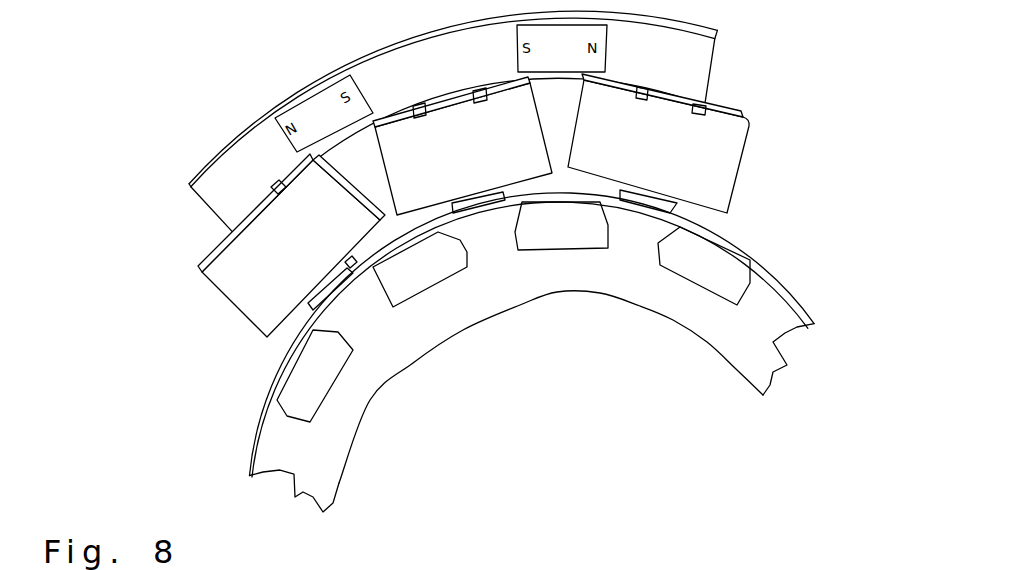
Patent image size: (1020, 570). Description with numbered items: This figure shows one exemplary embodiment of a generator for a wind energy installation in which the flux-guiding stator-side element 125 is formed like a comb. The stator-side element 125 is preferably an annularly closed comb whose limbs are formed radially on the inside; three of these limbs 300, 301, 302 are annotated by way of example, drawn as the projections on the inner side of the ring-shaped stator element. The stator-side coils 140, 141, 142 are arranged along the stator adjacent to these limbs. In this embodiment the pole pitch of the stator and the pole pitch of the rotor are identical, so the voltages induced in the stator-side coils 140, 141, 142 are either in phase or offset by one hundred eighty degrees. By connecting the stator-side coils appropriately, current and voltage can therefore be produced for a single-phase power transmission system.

The flux-guiding stator-side element 125 is at (250, 155).
The stator-side coil 140 is at (243, 292).
The stator-side coil 141 is at (518, 128).
The stator-side coil 142 is at (722, 175).
The limb 300 is at (333, 285).
The limb 301 is at (477, 200).
The limb 302 is at (650, 198).